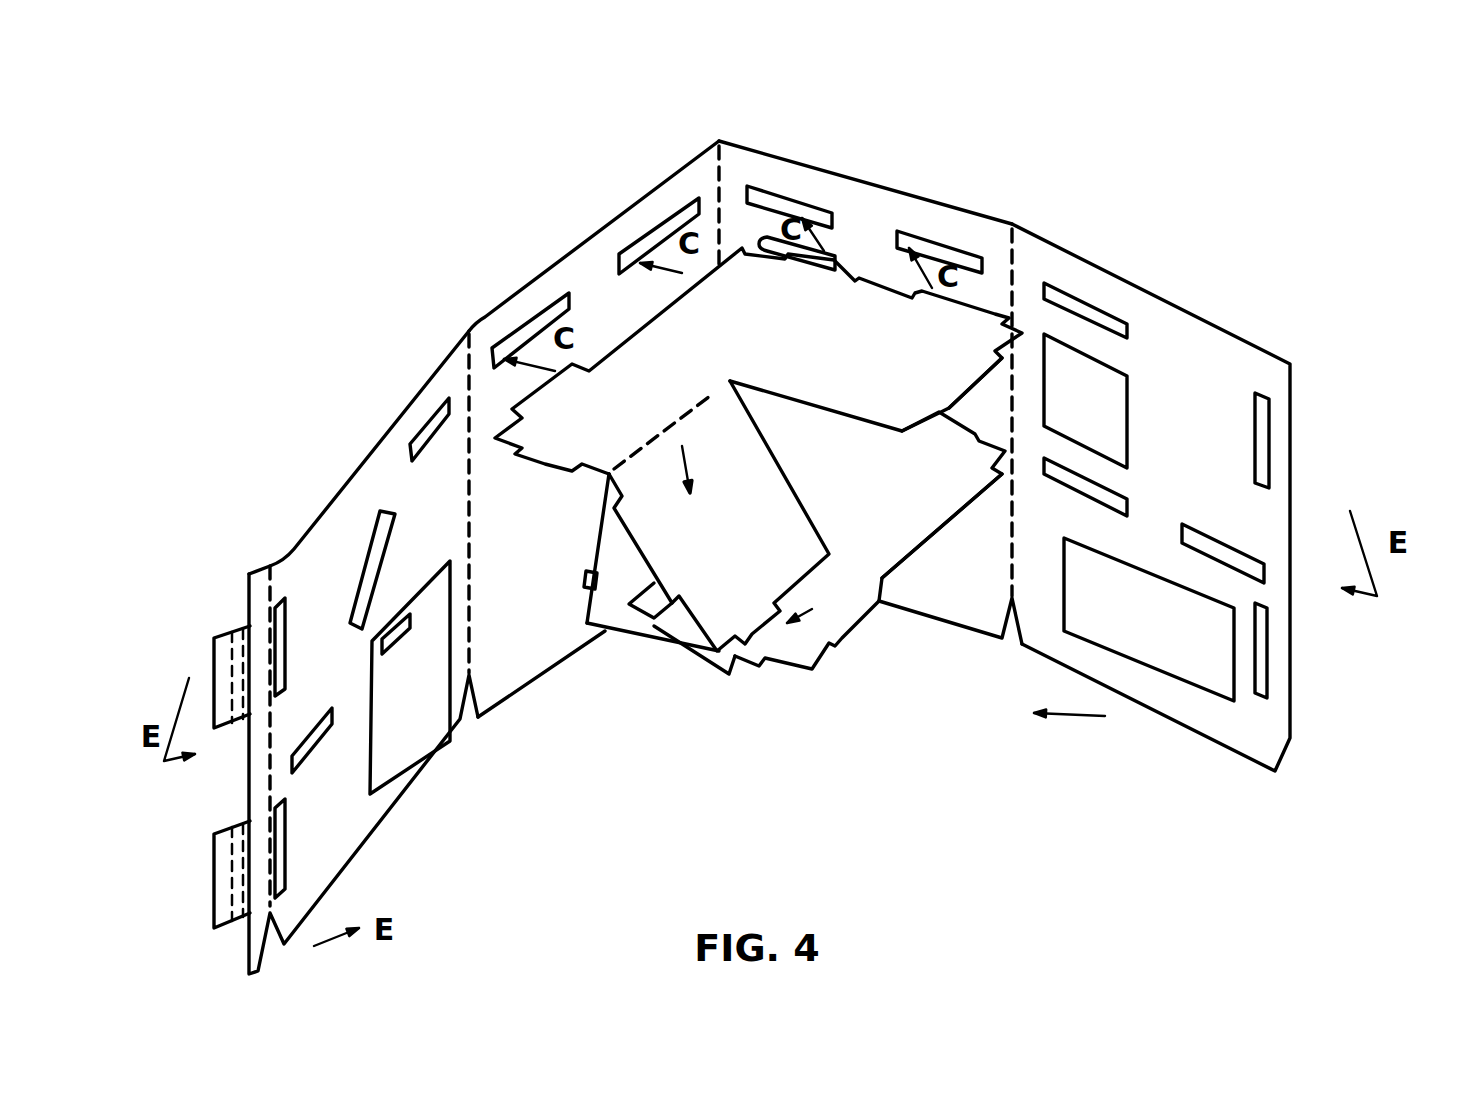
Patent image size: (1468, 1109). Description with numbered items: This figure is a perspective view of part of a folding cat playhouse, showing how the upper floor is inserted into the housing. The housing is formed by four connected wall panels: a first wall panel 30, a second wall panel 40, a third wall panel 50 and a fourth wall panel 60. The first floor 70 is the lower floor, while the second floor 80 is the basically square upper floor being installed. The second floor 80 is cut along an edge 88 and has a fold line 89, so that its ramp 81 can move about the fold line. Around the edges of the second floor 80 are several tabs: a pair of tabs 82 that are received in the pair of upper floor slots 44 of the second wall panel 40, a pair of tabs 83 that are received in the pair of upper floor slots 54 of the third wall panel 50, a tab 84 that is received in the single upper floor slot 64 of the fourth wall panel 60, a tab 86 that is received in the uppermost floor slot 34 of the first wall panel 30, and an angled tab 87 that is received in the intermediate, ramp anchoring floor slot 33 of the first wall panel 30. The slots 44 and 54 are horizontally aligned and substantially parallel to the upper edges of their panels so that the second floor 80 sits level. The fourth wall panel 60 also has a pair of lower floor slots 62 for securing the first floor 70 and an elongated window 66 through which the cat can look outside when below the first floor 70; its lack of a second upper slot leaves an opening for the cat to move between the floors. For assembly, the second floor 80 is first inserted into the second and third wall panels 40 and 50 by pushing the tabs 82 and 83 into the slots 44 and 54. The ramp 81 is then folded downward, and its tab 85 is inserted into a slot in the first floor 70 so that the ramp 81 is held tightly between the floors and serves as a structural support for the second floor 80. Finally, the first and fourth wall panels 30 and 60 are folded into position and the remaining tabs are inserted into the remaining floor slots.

The first wall panel 30 is at (297, 555).
The intermediate floor slot 33 is at (370, 567).
The uppermost floor slot 34 is at (420, 440).
The second wall panel 40 is at (510, 682).
The upper floor slots 44 is at (637, 243).
The third wall panel 50 is at (970, 608).
The upper floor slots 54 is at (830, 212).
The fourth wall panel 60 is at (1280, 483).
The lower floor slots 62 is at (1087, 500).
The upper floor slot 64 is at (1060, 292).
The elongated window 66 is at (1217, 663).
The first floor 70 is at (925, 537).
The second floor 80 is at (916, 490).
The ramp 81 is at (717, 630).
The tabs 82 is at (628, 317).
The tabs 83 is at (963, 297).
The tab 84 is at (990, 370).
The tab 85 is at (763, 637).
The tab 86 is at (548, 463).
The angled tab 87 is at (652, 620).
The cut edge 88 is at (868, 372).
The fold line 89 is at (700, 395).